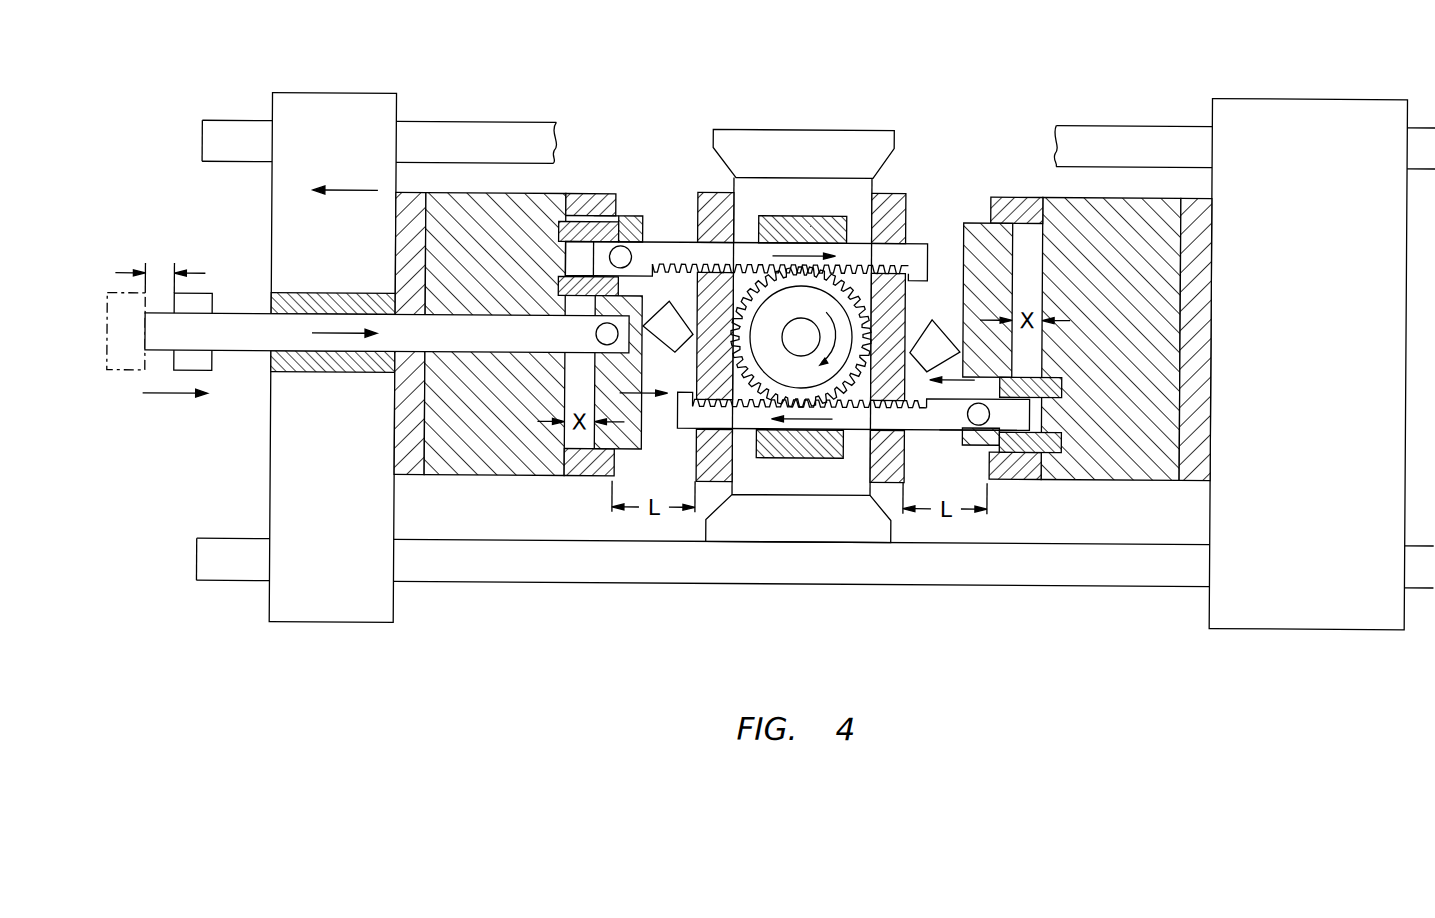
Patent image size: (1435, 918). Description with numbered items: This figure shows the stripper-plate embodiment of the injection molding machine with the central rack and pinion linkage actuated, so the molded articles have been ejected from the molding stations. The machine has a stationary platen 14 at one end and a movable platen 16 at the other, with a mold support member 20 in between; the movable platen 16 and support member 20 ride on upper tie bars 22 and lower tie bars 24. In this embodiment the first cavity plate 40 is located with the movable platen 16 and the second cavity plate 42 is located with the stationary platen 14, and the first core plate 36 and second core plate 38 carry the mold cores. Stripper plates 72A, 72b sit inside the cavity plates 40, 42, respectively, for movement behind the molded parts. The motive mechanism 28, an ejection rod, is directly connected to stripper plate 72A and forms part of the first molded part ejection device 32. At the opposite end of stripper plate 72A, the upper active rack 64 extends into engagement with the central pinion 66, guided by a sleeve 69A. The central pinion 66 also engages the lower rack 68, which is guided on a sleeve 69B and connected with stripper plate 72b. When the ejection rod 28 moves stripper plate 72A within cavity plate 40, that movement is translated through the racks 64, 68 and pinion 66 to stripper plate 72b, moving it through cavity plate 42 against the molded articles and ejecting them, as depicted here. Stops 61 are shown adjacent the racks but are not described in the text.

The stationary platen 14 is at (1307, 106).
The movable platen 16 is at (320, 100).
The mold support member 20 is at (852, 133).
The upper tie bars 22 is at (225, 127).
The lower tie bars 24 is at (230, 546).
The motive mechanism 28 is at (524, 348).
The first molded part ejection device 32 is at (665, 433).
The first core plate 36 is at (703, 194).
The second core plate 38 is at (888, 195).
The first cavity plate 40 is at (587, 196).
The second cavity plate 42 is at (1014, 197).
The stop 61 is at (664, 337).
The upper active rack 64 is at (912, 253).
The central pinion 66 is at (753, 292).
The lower rack 68 is at (920, 425).
The sleeve 69A is at (807, 216).
The sleeve 69B is at (800, 456).
The stripper plate 72A is at (630, 215).
The stripper plate 72b is at (973, 226).